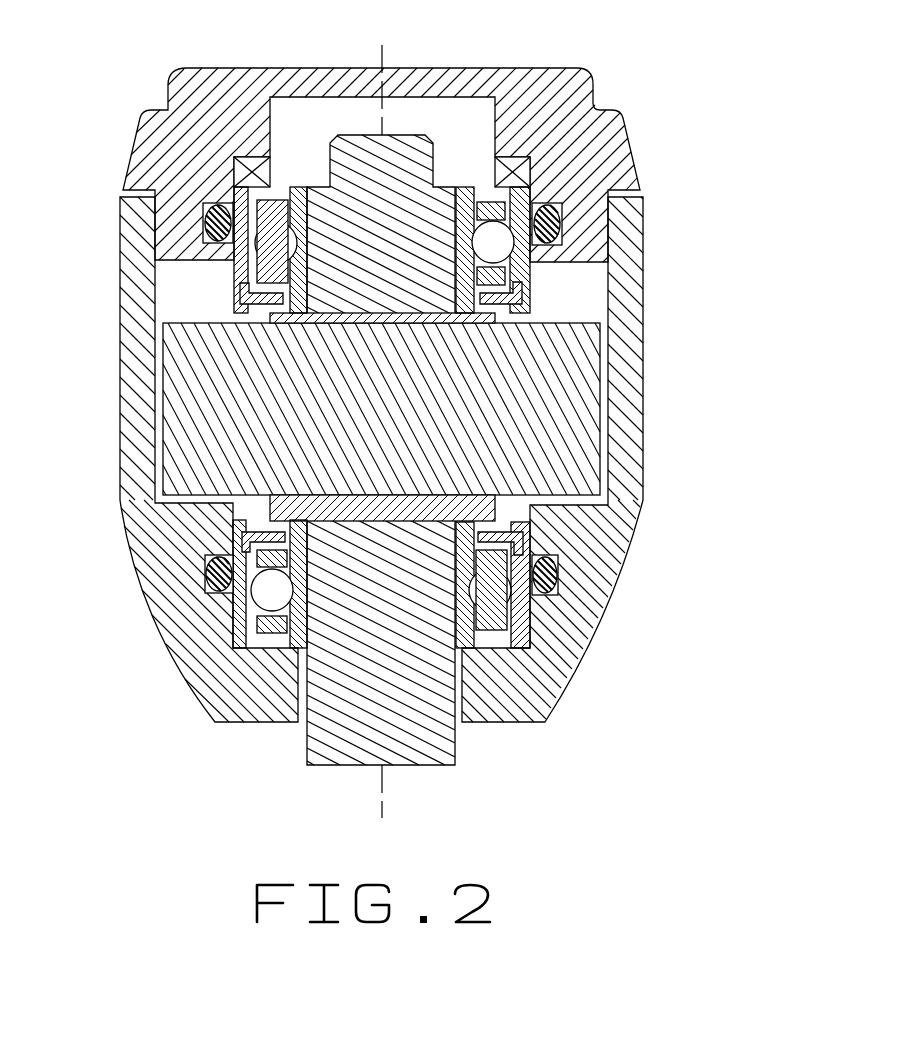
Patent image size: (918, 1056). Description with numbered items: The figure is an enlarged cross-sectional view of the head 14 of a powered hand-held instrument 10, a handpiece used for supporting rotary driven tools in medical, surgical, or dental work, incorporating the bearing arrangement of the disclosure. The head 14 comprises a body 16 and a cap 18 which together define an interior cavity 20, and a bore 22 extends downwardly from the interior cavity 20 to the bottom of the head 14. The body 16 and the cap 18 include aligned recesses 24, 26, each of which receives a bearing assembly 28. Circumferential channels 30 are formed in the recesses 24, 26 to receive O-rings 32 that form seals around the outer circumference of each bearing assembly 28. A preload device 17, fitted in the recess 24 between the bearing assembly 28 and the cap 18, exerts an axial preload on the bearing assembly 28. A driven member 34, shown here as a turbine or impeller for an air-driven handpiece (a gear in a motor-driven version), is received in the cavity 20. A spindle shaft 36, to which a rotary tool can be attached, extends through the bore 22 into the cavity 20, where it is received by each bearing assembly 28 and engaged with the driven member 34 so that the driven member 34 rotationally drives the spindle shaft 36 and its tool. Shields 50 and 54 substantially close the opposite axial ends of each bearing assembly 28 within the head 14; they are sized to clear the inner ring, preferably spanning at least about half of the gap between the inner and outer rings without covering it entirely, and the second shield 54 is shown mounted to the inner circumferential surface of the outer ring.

The powered hand-held instrument 10 is at (640, 83).
The head 14 is at (120, 405).
The body 16 is at (600, 459).
The preload device 17 is at (252, 165).
The cap 18 is at (435, 132).
The interior cavity 20 is at (598, 459).
The bore 22 is at (302, 700).
The recess 24 is at (562, 662).
The recess 26 is at (548, 189).
The bearing assembly 28 is at (301, 375).
The circumferential channel 30 is at (560, 222).
The O-ring 32 is at (560, 228).
The driven member 34 is at (553, 437).
The spindle shaft 36 is at (373, 484).
The shield 50 is at (248, 208).
The second shield 54 is at (233, 283).